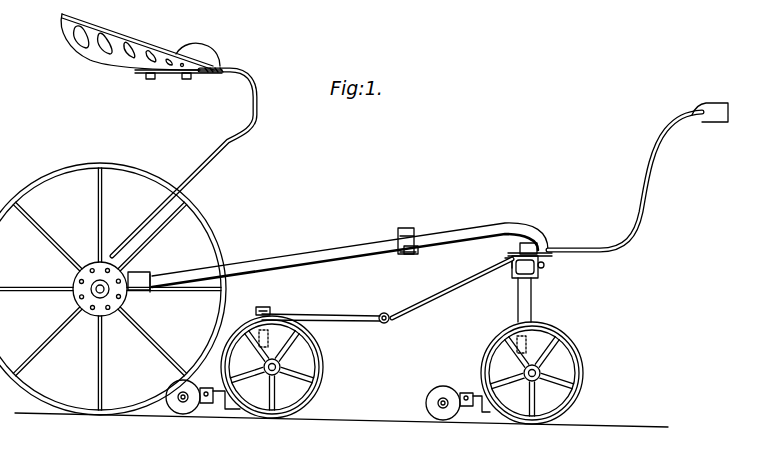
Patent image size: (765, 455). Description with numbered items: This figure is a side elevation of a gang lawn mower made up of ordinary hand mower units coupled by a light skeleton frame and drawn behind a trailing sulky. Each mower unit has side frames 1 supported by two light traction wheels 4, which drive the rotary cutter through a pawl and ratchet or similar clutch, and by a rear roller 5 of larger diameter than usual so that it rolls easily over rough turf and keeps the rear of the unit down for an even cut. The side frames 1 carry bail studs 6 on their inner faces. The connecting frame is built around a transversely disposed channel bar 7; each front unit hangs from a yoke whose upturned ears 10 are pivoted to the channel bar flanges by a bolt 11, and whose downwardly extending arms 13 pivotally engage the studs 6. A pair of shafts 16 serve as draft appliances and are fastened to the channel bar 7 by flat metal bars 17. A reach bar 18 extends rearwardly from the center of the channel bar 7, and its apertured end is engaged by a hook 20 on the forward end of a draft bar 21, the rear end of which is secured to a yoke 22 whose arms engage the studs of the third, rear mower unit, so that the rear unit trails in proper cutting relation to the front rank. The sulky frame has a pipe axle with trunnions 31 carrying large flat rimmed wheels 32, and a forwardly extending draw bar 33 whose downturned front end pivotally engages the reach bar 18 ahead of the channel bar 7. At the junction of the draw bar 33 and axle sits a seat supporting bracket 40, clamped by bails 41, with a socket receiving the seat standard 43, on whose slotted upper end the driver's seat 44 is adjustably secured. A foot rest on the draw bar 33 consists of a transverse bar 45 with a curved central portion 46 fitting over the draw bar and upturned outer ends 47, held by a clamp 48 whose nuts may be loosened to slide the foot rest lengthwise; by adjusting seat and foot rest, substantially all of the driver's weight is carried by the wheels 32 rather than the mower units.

The side frames 1 is at (288, 343).
The traction wheels 4 is at (324, 368).
The rear roller 5 is at (182, 407).
The studs 6 is at (250, 326).
The channel bar 7 is at (540, 243).
The upturned ears 10 is at (548, 267).
The bolt 11 is at (505, 262).
The downwardly extending arms 13 is at (530, 309).
The shafts 16 is at (714, 110).
The flat metal bars 17 is at (640, 190).
The reach bar 18 is at (440, 298).
The hook 20 is at (386, 314).
The draft bar 21 is at (326, 314).
The yoke 22 is at (263, 307).
The trunnions 31 is at (92, 285).
The wheels 32 is at (104, 166).
The draw bar 33 is at (283, 259).
The seat supporting bracket 40 is at (138, 272).
The bails 41 is at (157, 285).
The seat standard 43 is at (246, 119).
The driver's seat 44 is at (80, 49).
The transverse bar 45 is at (402, 254).
The curved central portion 46 is at (418, 228).
The upturned outer ends 47 is at (405, 229).
The clamp 48 is at (416, 254).